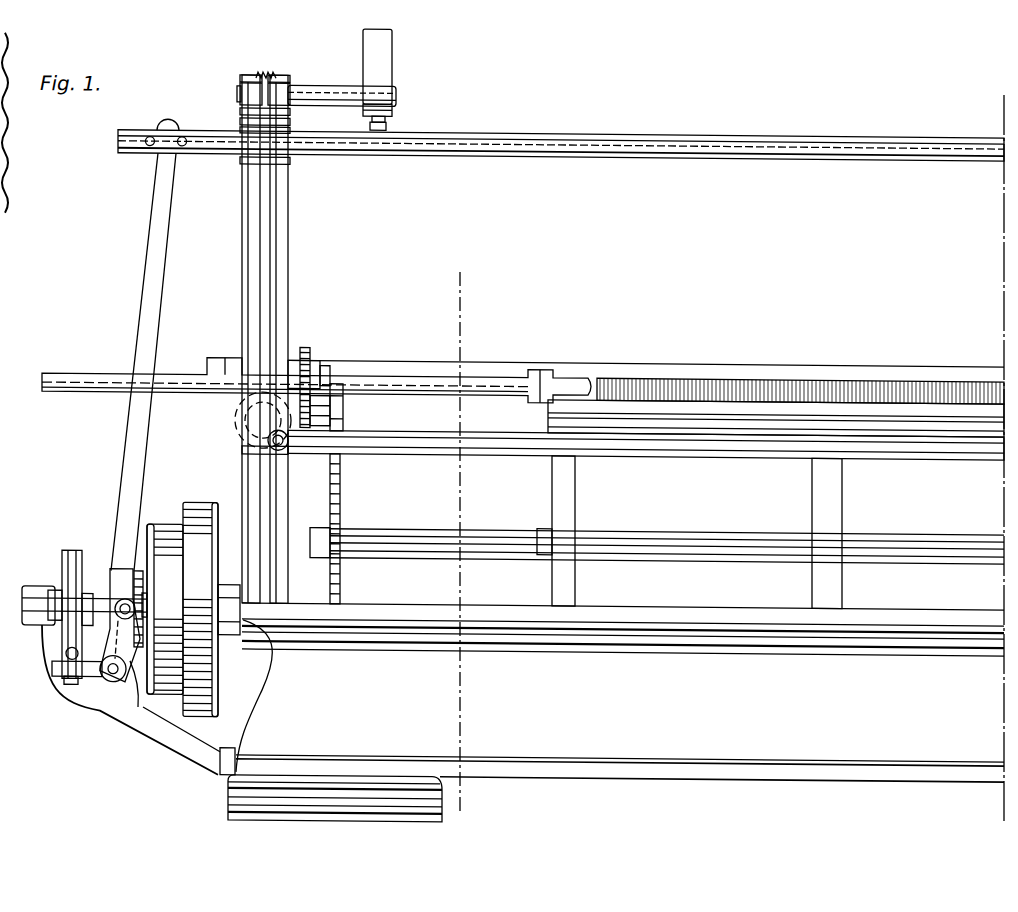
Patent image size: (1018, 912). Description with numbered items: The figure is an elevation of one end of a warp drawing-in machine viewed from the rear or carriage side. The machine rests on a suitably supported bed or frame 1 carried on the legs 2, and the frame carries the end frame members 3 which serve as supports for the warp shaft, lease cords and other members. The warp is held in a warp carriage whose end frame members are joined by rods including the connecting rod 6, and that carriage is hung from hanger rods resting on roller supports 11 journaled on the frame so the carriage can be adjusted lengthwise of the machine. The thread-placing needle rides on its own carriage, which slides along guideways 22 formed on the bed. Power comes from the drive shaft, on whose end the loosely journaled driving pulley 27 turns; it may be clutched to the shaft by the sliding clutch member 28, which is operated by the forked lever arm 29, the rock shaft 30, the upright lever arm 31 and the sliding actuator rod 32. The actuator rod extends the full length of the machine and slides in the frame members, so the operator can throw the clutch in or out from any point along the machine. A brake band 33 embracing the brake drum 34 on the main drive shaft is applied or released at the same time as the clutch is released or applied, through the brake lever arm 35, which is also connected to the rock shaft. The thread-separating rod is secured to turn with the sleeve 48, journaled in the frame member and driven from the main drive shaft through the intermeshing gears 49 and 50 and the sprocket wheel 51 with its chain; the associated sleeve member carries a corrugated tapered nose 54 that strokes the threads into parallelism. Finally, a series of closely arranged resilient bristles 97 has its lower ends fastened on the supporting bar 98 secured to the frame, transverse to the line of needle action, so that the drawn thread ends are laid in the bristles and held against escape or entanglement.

The bed or frame 1 is at (620, 454).
The legs 2 is at (233, 800).
The end frame members 3 is at (288, 260).
The connecting rod 6 is at (457, 533).
The roller supports 11 is at (237, 419).
The guideways 22 is at (945, 611).
The driving pulley 27 is at (200, 510).
The sliding clutch member 28 is at (122, 592).
The forked lever arm 29 is at (137, 700).
The rock shaft 30 is at (111, 672).
The upright lever arm 31 is at (152, 300).
The sliding actuator rod 32 is at (612, 151).
The brake band 33 is at (72, 565).
The brake drum 34 is at (62, 575).
The brake lever arm 35 is at (95, 657).
The sleeve 48 is at (400, 375).
The gear 49 is at (312, 350).
The gear 50 is at (308, 424).
The sprocket wheel 51 is at (344, 406).
The corrugated tapered nose 54 is at (343, 483).
The resilient bristles 97 is at (905, 379).
The supporting bar 98 is at (735, 397).